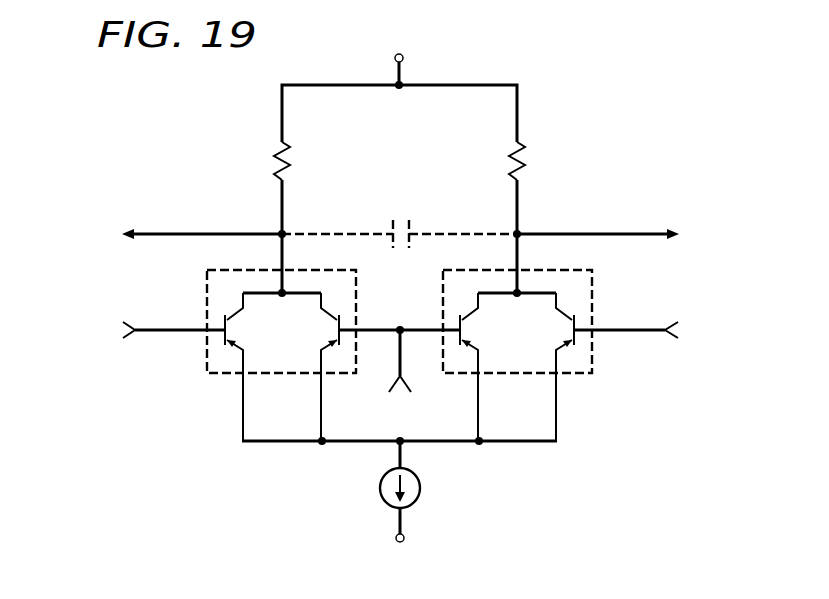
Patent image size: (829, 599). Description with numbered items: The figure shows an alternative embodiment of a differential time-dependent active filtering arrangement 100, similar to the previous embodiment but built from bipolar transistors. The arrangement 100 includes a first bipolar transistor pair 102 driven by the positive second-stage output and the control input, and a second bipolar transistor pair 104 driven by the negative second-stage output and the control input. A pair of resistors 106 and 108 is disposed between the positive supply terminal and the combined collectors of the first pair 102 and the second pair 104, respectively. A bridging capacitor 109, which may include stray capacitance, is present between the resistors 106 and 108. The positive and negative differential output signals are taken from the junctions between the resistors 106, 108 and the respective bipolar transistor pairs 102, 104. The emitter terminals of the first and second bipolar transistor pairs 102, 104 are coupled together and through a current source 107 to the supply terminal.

The differential time-dependent active filtering arrangement 100 is at (638, 95).
The first bipolar transistor pair 102 is at (208, 352).
The second bipolar transistor pair 104 is at (592, 352).
The resistor 106 is at (273, 154).
The current source 107 is at (380, 485).
The resistor 108 is at (526, 148).
The bridging capacitor 109 is at (313, 234).